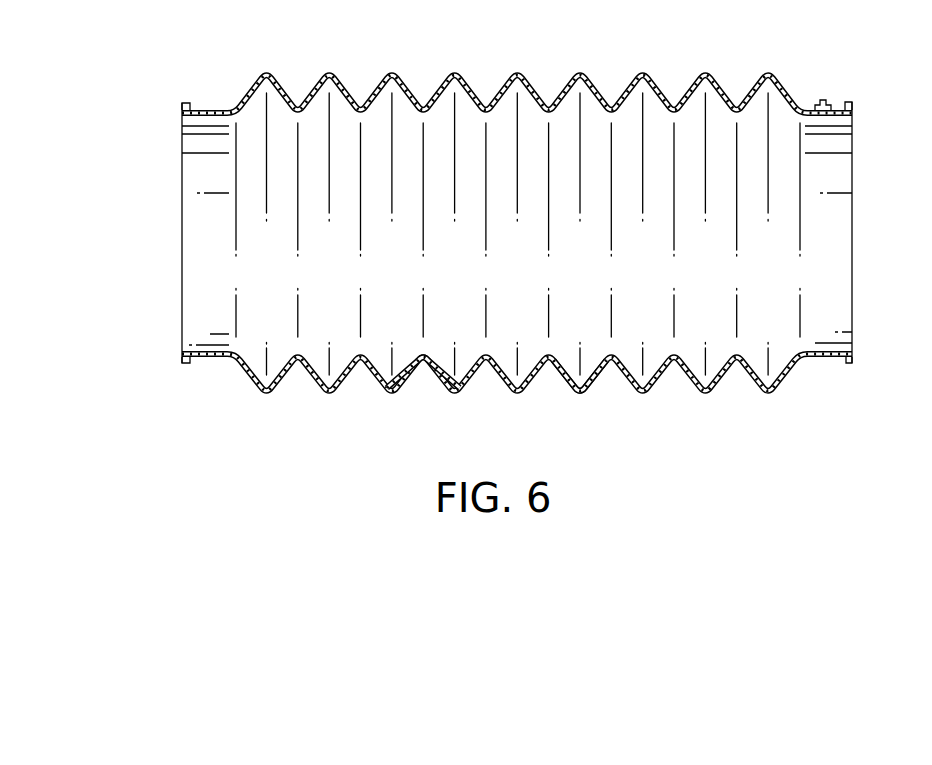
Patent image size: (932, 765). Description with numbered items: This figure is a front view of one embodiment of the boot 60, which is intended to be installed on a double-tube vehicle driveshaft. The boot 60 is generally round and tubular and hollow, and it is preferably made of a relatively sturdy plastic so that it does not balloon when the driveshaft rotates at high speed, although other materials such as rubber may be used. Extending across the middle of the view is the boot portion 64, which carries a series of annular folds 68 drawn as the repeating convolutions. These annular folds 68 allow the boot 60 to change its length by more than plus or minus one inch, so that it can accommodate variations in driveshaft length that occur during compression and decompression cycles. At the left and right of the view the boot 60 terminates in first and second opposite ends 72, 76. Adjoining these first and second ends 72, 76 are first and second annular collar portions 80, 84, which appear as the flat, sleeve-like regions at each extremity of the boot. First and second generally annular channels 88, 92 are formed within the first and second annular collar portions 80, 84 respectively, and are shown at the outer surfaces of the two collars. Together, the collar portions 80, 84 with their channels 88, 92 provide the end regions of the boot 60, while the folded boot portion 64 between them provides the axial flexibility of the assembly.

The boot 60 is at (791, 90).
The boot portion 64 is at (581, 397).
The annular folds 68 is at (433, 378).
The first end 72 is at (201, 244).
The second end 76 is at (862, 239).
The first annular collar portion 80 is at (214, 357).
The second annular collar portion 84 is at (826, 357).
The first annular channel 88 is at (199, 110).
The second annular channel 92 is at (827, 103).